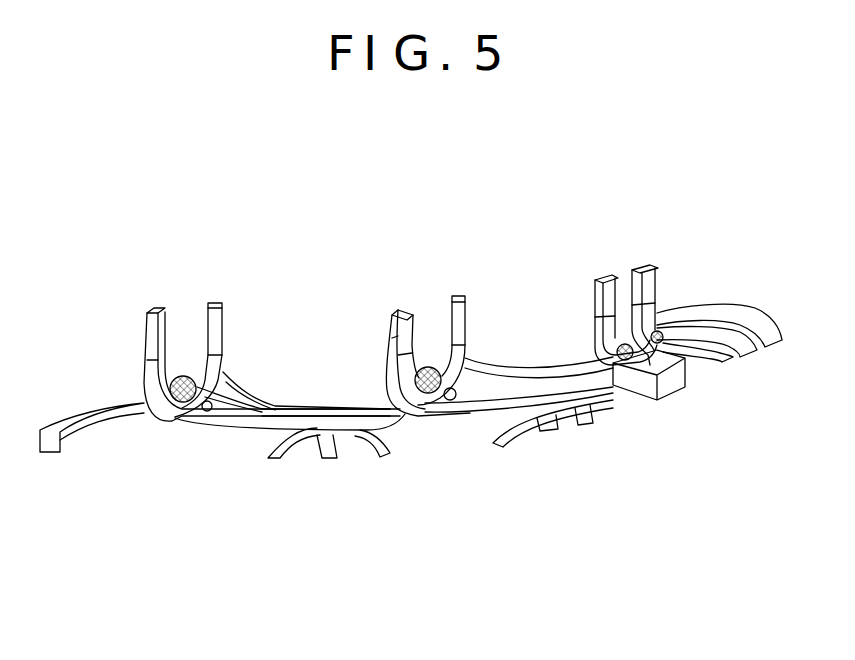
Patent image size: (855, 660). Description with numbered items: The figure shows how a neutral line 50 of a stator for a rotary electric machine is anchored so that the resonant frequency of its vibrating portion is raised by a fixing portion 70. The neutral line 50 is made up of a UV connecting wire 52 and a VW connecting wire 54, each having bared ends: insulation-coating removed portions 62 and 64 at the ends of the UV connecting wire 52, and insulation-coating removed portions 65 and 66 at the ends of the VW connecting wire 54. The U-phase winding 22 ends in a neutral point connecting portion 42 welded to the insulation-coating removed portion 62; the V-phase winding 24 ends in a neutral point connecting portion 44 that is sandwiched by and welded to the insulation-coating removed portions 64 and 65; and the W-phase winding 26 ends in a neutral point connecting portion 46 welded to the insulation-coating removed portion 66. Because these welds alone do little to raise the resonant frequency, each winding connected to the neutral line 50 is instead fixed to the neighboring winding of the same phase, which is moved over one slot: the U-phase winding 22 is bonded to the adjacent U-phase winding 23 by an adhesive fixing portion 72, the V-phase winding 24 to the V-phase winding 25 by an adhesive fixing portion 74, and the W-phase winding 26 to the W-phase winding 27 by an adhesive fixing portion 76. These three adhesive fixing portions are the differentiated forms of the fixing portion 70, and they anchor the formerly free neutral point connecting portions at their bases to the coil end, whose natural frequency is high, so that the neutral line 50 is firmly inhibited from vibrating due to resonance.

The U-phase winding 22 is at (593, 343).
The U-phase winding 23 is at (637, 265).
The V-phase winding 24 is at (426, 368).
The V-phase winding 25 is at (458, 300).
The W-phase winding 26 is at (170, 367).
The W-phase winding 27 is at (215, 308).
The neutral point connecting portion 42 is at (597, 287).
The neutral point connecting portion 44 is at (393, 337).
The neutral point connecting portion 46 is at (173, 330).
The neutral line 50 is at (163, 421).
The UV connecting wire 52 is at (463, 413).
The VW connecting wire 54 is at (220, 425).
The insulation-coating removed portion 62 is at (613, 300).
The insulation-coating removed portion 64 is at (408, 342).
The insulation-coating removed portion 65 is at (387, 353).
The insulation-coating removed portion 66 is at (150, 338).
The fixing portion 70 is at (702, 550).
The adhesive fixing portion 72 is at (628, 365).
The adhesive fixing portion 74 is at (453, 378).
The adhesive fixing portion 76 is at (197, 410).